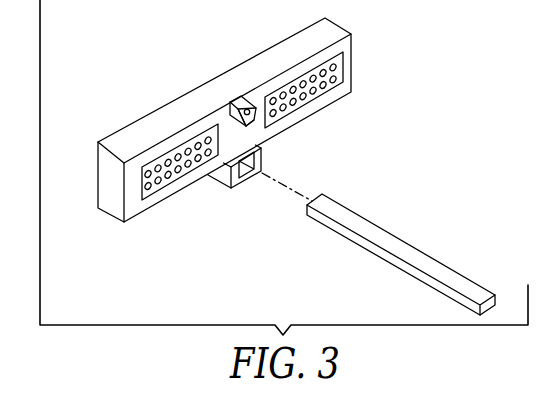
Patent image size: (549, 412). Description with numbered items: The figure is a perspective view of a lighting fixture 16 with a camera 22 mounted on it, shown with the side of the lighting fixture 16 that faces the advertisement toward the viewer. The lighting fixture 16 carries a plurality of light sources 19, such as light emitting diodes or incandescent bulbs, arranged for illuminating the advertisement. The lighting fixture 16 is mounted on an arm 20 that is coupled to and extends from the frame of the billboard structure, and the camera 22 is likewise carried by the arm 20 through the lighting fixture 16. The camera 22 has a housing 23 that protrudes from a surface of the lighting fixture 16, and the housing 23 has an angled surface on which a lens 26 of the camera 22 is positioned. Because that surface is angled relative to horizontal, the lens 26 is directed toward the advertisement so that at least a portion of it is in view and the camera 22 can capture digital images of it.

The lighting fixture 16 is at (207, 98).
The light sources 19 is at (334, 82).
The arm 20 is at (405, 252).
The camera 22 is at (248, 131).
The housing 23 is at (236, 124).
The lens 26 is at (250, 101).